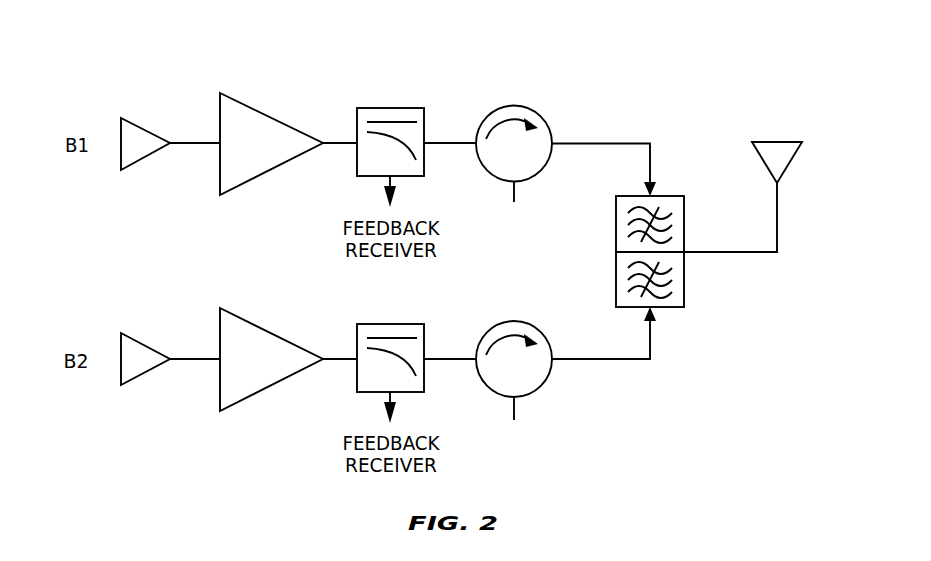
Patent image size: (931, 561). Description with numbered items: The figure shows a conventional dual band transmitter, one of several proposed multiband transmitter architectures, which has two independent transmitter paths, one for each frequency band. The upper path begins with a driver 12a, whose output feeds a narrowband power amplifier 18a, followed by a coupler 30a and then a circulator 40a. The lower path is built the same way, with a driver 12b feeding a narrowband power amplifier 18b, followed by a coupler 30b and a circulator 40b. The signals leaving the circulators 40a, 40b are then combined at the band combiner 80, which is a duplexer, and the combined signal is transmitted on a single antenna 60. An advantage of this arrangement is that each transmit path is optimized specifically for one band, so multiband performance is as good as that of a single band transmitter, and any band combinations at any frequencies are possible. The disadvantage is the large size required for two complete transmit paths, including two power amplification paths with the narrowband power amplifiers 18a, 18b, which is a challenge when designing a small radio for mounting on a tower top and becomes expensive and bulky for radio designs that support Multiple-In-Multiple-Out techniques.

The driver 12a is at (143, 114).
The narrowband power amplifier 18a is at (271, 121).
The coupler 30a is at (390, 132).
The circulator 40a is at (520, 130).
The driver 12b is at (145, 346).
The narrowband power amplifier 18b is at (271, 352).
The coupler 30b is at (390, 358).
The circulator 40b is at (514, 357).
The band combiner 80 is at (654, 182).
The antenna 60 is at (775, 137).